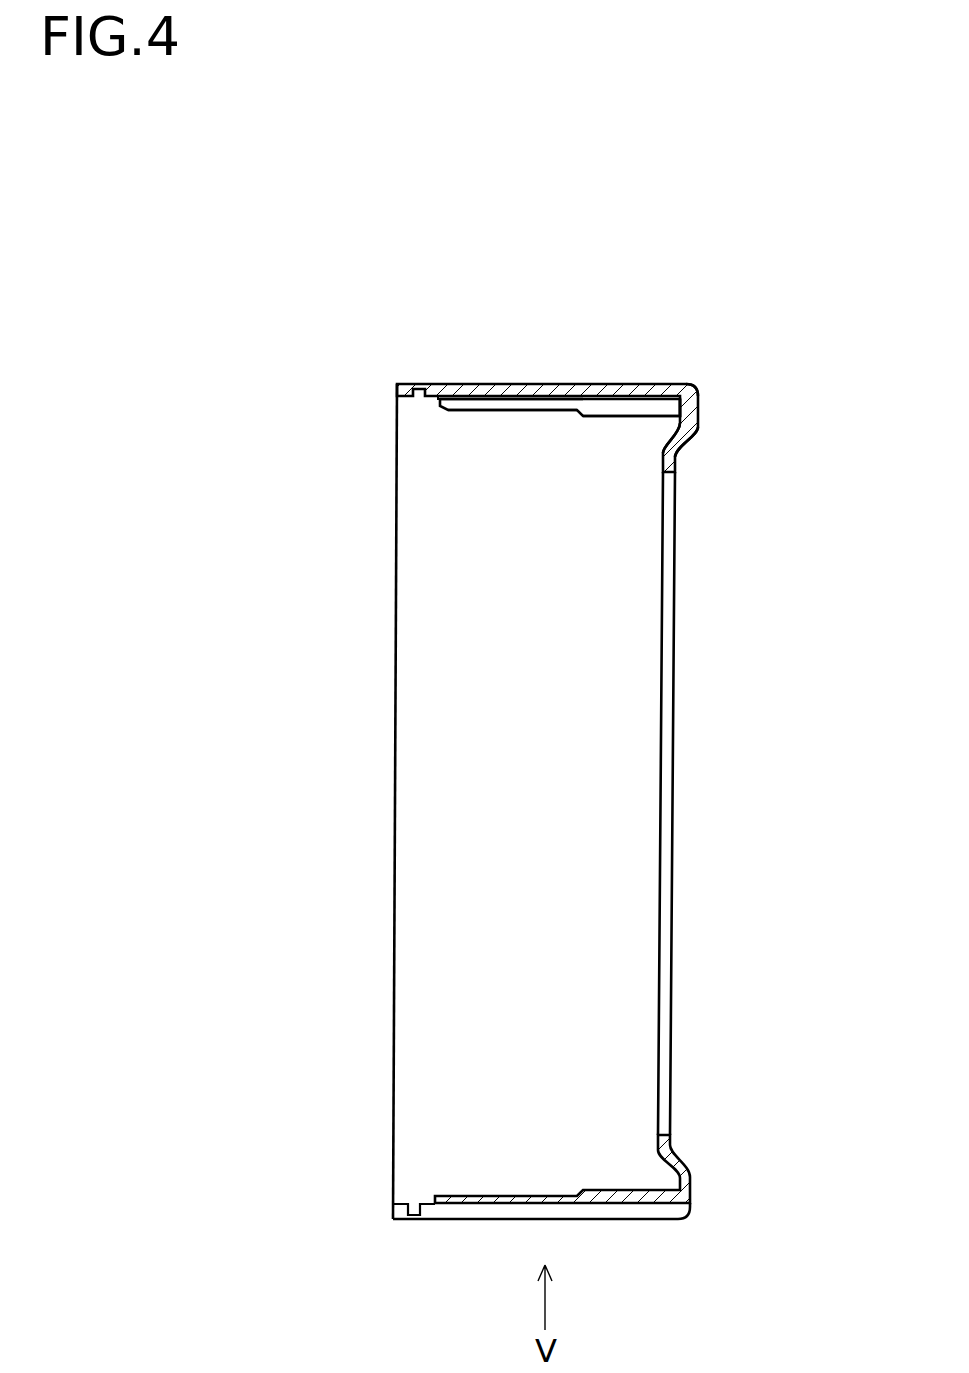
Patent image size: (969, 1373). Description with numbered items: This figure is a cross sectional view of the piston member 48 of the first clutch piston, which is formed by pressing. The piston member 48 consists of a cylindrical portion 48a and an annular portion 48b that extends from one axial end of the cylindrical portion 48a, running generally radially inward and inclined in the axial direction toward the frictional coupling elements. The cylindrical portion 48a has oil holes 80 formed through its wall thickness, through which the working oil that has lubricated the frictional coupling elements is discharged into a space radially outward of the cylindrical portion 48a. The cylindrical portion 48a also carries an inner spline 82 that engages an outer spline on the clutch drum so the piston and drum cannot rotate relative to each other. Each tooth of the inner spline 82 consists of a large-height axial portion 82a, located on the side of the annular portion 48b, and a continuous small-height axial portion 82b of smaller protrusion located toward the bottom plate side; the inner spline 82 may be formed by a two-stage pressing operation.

The piston member 48 is at (592, 334).
The cylindrical portion 48a is at (480, 392).
The annular portion 48b is at (693, 432).
The oil holes 80 is at (654, 388).
The inner spline 82 is at (538, 470).
The large-height axial portion 82a is at (622, 412).
The small-height axial portion 82b is at (483, 405).